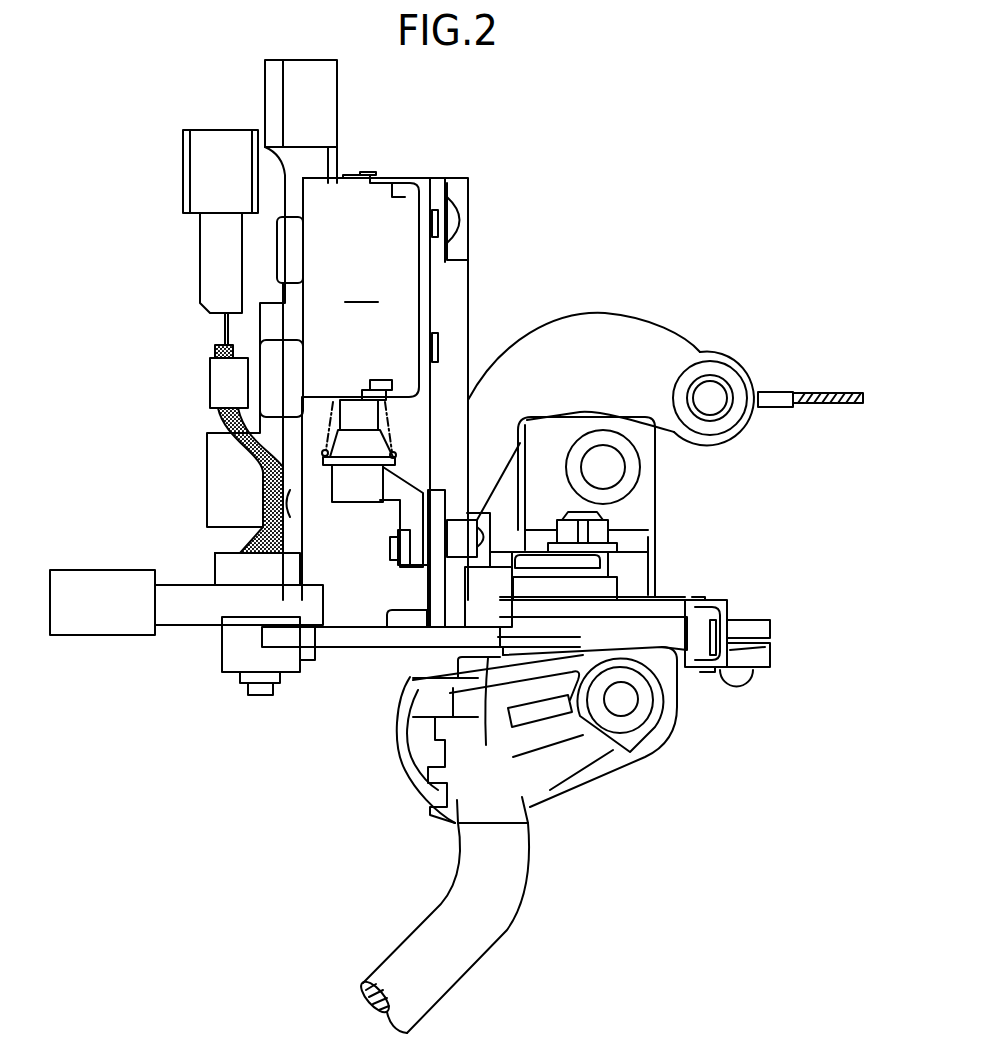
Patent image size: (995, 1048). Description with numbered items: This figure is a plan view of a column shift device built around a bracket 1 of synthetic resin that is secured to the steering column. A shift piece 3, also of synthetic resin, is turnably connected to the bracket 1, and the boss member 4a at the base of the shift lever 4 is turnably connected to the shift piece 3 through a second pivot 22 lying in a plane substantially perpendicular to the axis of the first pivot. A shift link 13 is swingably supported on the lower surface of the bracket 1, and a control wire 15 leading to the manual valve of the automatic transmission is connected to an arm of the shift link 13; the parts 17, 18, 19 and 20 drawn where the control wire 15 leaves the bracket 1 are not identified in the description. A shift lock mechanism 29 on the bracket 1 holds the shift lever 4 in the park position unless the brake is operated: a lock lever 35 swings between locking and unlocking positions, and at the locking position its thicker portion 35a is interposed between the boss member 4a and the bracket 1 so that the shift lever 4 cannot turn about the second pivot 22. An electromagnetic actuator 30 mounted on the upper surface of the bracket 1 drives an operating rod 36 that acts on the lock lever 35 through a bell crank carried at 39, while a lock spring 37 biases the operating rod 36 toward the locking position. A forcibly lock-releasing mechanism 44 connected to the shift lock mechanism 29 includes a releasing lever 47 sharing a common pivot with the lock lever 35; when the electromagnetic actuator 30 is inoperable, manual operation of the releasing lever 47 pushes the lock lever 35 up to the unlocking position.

The bracket 1 is at (657, 600).
The shift piece 3 is at (667, 760).
The shift lever 4 is at (492, 930).
The boss member 4a is at (577, 788).
The shift link 13 is at (568, 323).
The control wire 15 is at (813, 392).
The cable end fitting 17 is at (747, 610).
The clamp 18 is at (710, 615).
The retainer 19 is at (728, 655).
The cable end 20 is at (728, 630).
The second pivot 22 is at (627, 698).
The shift lock mechanism 29 is at (375, 655).
The electromagnetic actuator 30 is at (325, 343).
The lock lever 35 is at (350, 647).
The thicker portion 35a is at (610, 753).
The operating rod 36 is at (365, 400).
The lock spring 37 is at (388, 393).
The bell crank pivot 39 is at (437, 593).
The forcibly lock-releasing mechanism 44 is at (144, 638).
The releasing lever 47 is at (105, 582).